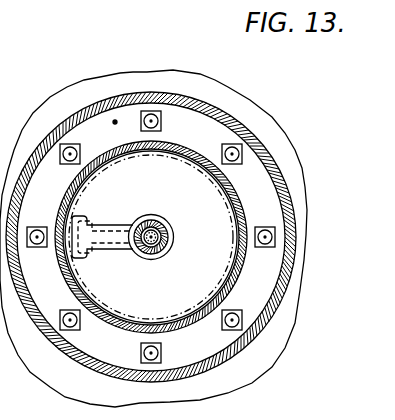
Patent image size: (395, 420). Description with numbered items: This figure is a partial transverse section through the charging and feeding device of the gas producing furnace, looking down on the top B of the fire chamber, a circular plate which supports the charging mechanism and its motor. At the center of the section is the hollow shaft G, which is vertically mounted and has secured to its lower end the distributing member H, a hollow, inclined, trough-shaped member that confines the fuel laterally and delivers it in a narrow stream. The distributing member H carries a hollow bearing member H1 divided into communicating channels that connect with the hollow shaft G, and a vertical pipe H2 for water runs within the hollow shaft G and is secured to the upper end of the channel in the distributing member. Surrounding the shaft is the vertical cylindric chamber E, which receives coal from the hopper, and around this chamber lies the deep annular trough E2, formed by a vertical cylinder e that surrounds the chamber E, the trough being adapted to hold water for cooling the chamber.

The top of the fire chamber B is at (114, 70).
The vertical cylindric chamber E is at (73, 177).
The annular trough E2 is at (180, 113).
The vertical cylinder e is at (232, 118).
The distributing member H is at (151, 237).
The hollow bearing member H1 is at (89, 216).
The vertical pipe H2 is at (152, 245).
The hollow shaft G is at (163, 226).